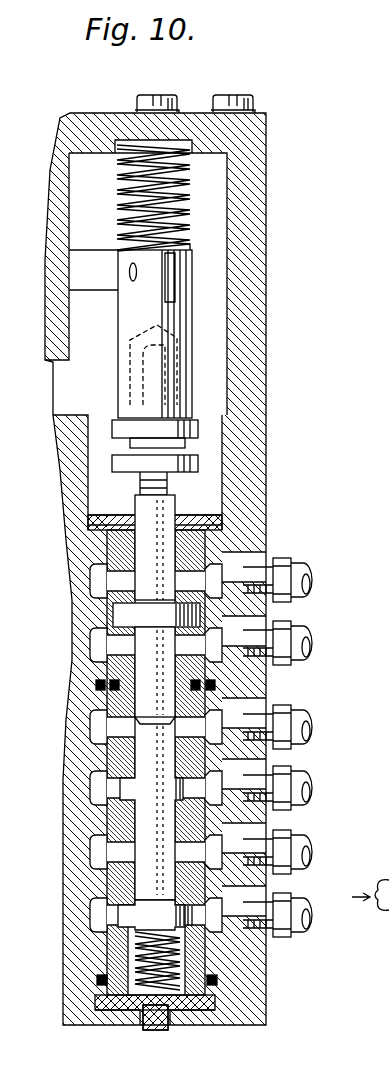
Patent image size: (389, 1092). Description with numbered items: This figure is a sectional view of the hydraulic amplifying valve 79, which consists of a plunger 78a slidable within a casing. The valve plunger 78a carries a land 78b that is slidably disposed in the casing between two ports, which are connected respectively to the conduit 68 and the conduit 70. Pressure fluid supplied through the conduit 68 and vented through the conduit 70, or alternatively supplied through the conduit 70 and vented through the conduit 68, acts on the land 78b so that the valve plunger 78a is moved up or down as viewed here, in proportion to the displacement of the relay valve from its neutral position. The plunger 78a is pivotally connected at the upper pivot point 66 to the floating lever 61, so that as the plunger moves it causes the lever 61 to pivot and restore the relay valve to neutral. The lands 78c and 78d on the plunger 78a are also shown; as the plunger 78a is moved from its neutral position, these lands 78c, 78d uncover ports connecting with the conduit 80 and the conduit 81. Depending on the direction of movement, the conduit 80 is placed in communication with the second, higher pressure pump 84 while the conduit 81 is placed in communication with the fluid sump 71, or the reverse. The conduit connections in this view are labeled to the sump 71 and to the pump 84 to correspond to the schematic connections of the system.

The floating lever 61 is at (91, 290).
The upper pivot point 66 is at (128, 272).
The conduit 68 is at (303, 633).
The conduit 70 is at (298, 568).
The fluid sump 71 is at (331, 741).
The plunger 78a is at (119, 512).
The land 78b is at (127, 615).
The land 78c is at (150, 797).
The land 78d is at (143, 917).
The amplifying valve 79 is at (57, 565).
The conduit 80 is at (303, 781).
The conduit 81 is at (302, 907).
The second, higher pressure pump 84 is at (339, 864).